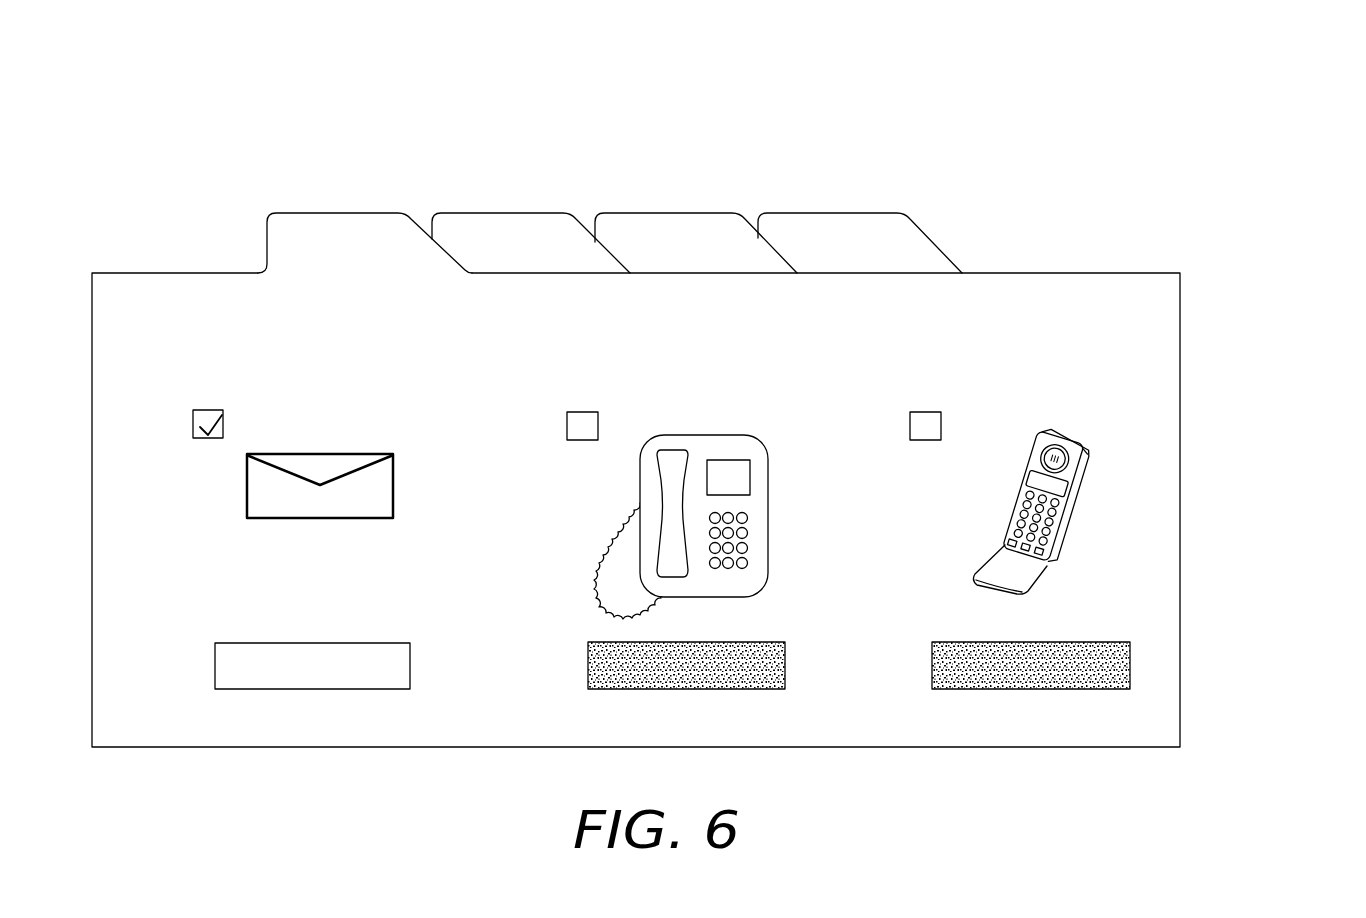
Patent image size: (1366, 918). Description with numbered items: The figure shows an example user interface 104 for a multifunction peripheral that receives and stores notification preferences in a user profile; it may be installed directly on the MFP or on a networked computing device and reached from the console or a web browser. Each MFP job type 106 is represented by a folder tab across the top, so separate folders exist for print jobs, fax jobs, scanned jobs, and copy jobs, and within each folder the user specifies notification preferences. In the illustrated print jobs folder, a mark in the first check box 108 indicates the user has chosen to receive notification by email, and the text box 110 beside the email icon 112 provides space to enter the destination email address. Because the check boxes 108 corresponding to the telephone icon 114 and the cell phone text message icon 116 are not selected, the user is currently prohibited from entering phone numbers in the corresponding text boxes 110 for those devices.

The user interface 104 is at (1240, 158).
The MFP job type 106 is at (375, 210).
The check box 108 is at (209, 410).
The text box 110 is at (384, 691).
The email envelope icon 112 is at (395, 488).
The telephone icon 114 is at (770, 514).
The cell phone text message icon 116 is at (1080, 484).